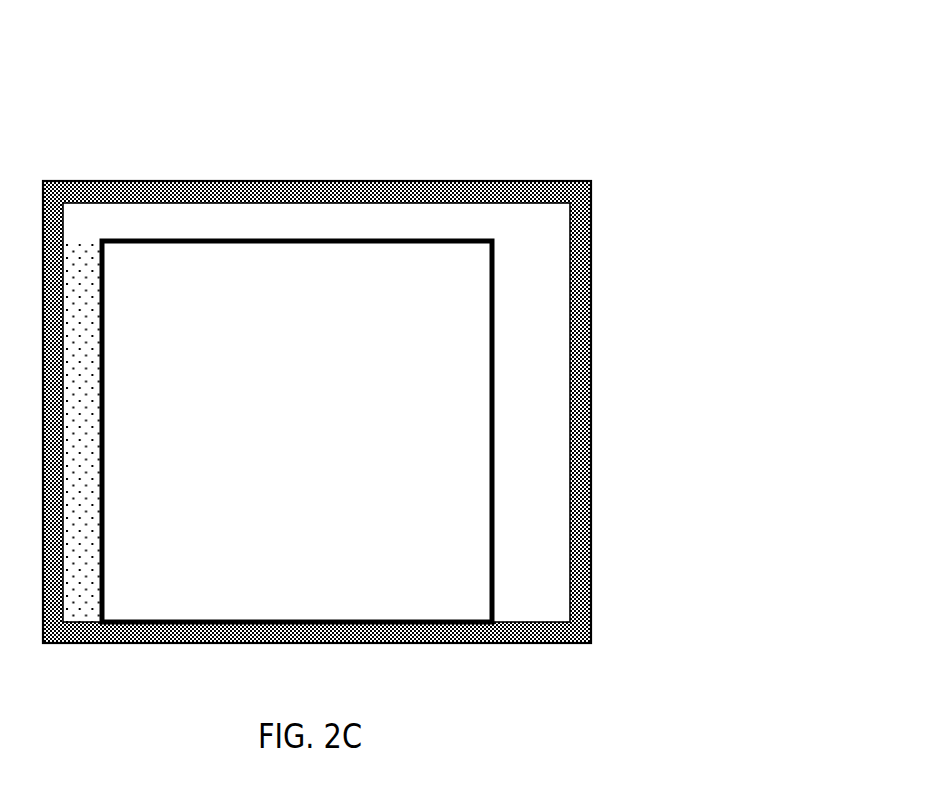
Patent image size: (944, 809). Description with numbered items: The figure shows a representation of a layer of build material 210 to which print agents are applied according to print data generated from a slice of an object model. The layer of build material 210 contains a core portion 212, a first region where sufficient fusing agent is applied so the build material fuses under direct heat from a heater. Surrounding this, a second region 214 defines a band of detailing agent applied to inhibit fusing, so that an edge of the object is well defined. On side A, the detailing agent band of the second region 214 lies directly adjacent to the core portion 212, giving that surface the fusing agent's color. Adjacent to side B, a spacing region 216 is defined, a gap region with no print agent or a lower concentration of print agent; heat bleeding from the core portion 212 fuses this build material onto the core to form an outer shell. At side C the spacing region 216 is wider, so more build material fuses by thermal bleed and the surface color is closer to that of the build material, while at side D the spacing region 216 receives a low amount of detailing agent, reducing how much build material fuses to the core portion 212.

The layer of build material 210 is at (325, 330).
The core portion 212 is at (330, 438).
The second region 214 is at (302, 195).
The spacing region 216 is at (148, 227).